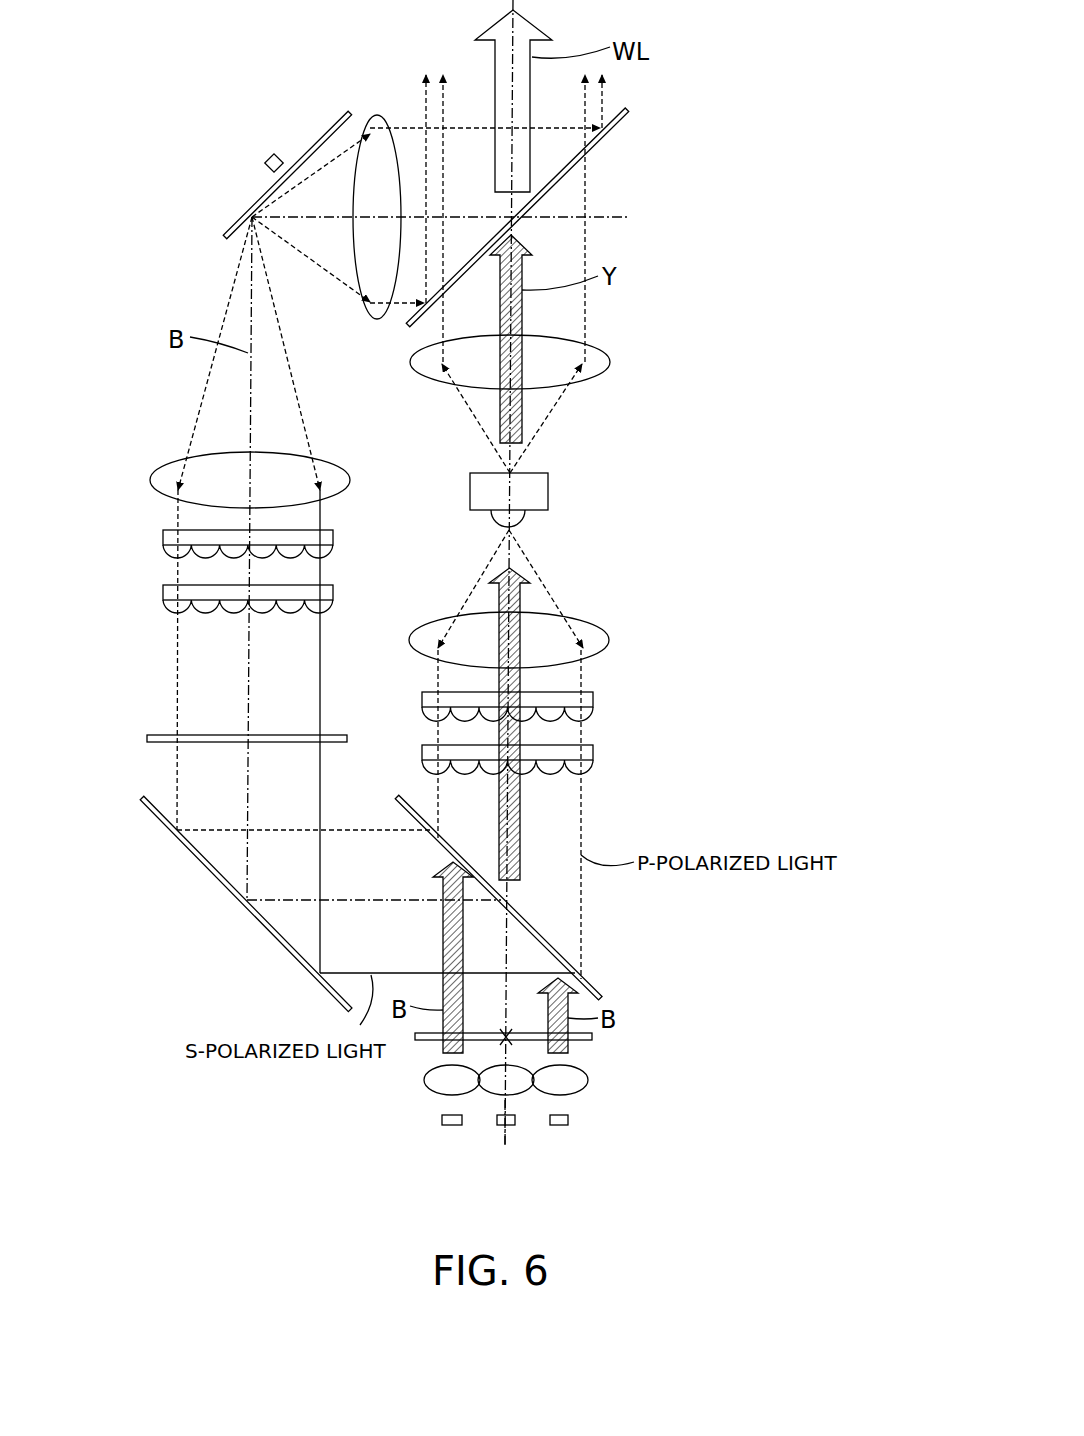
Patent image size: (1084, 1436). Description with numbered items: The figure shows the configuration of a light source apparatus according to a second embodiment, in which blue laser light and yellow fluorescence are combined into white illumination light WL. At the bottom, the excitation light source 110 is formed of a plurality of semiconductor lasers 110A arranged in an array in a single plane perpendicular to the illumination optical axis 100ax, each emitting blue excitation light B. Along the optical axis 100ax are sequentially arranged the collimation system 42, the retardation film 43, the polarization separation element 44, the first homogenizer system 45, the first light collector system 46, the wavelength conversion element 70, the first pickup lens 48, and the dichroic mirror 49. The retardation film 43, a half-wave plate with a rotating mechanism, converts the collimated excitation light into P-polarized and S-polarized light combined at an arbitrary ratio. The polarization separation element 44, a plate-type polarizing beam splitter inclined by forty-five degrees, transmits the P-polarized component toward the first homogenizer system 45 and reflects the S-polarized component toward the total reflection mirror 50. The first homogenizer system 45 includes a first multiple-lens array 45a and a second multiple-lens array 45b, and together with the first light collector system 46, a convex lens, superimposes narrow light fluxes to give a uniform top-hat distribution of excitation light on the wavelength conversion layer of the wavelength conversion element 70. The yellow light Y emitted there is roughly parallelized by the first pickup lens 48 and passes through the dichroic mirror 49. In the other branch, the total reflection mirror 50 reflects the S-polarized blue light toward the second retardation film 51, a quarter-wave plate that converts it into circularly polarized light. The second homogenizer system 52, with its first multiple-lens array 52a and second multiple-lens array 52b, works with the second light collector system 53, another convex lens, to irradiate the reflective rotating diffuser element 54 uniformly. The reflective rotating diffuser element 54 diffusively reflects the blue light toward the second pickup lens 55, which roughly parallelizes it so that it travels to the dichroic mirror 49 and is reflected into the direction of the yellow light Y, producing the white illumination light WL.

The excitation light source 110 is at (445, 1138).
The semiconductor laser 110A is at (568, 1118).
The illumination optical axis 100ax is at (506, 1137).
The collimation system 42 is at (588, 1075).
The retardation film 43 is at (592, 1036).
The polarization separation element 44 is at (600, 990).
The first homogenizer system 45 is at (570, 728).
The first multiple-lens array 45a is at (593, 755).
The second multiple-lens array 45b is at (593, 700).
The first light collector system 46 is at (609, 640).
The wavelength conversion element 70 is at (548, 492).
The first pickup lens 48 is at (610, 365).
The dichroic mirror 49 is at (627, 112).
The total reflection mirror 50 is at (158, 828).
The second retardation film 51 is at (147, 738).
The second homogenizer system 52 is at (187, 567).
The first multiple-lens array 52a is at (210, 597).
The second multiple-lens array 52b is at (163, 540).
The second light collector system 53 is at (152, 483).
The reflective rotating diffuser element 54 is at (223, 233).
The second pickup lens 55 is at (358, 272).